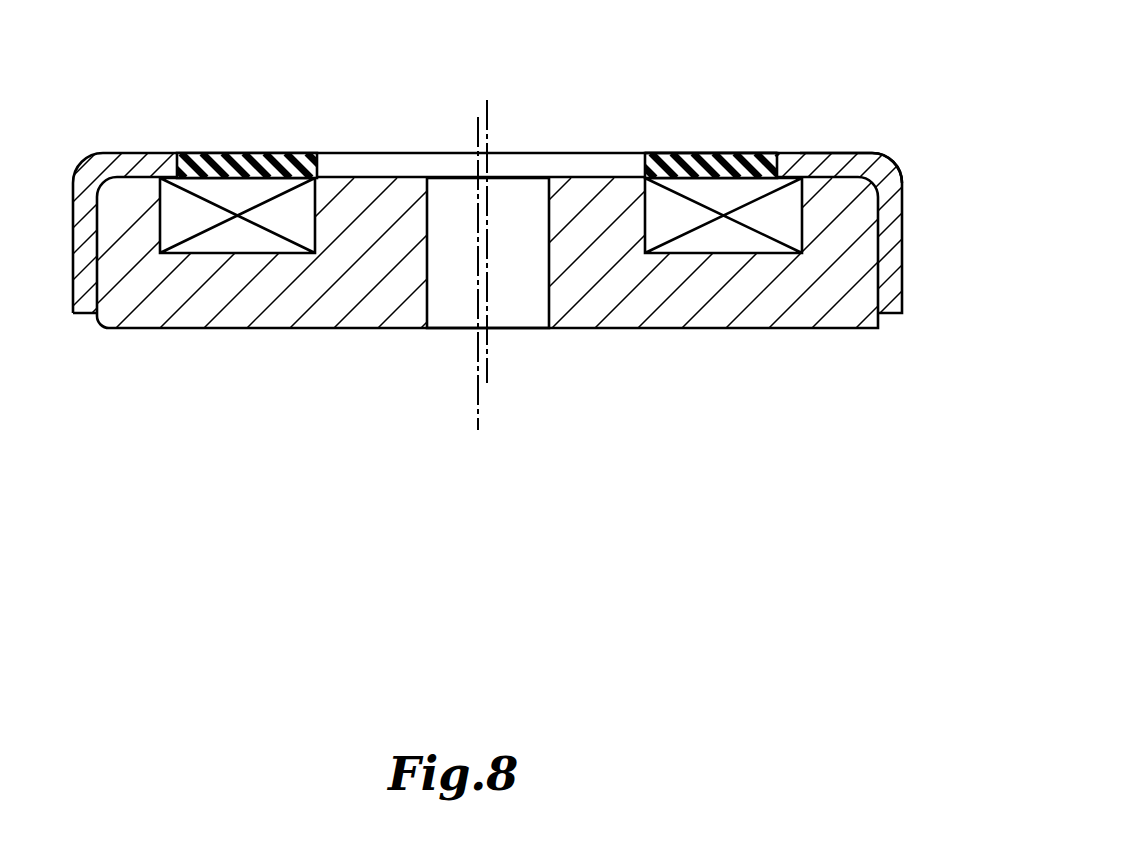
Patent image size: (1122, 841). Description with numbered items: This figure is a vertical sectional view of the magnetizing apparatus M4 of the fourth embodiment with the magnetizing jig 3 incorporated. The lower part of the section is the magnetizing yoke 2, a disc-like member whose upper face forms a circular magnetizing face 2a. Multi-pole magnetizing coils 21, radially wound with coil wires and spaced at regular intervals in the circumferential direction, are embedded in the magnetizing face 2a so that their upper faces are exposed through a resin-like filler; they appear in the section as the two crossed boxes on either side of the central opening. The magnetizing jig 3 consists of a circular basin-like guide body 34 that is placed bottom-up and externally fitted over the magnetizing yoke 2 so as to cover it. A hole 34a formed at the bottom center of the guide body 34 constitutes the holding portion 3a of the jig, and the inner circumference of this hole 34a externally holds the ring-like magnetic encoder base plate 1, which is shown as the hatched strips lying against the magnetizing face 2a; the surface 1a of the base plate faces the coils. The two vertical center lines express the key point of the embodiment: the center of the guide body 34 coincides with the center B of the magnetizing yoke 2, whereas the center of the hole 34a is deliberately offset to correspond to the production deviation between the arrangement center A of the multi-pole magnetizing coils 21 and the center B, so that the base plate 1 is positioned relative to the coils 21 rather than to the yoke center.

The magnetizing apparatus M4 is at (533, 205).
The magnetic encoder base plate 1 is at (671, 155).
The magnet surface 1a is at (261, 177).
The magnetizing yoke 2 is at (855, 322).
The magnetizing face 2a is at (857, 155).
The multi-pole magnetizing coil 21 is at (712, 242).
The magnetizing jig 3 is at (893, 200).
The circular basin-like guide body 34 is at (945, 242).
The hole 34a is at (765, 155).
The holding portion 3a is at (796, 67).
The arrangement center A is at (475, 361).
The center B is at (490, 361).